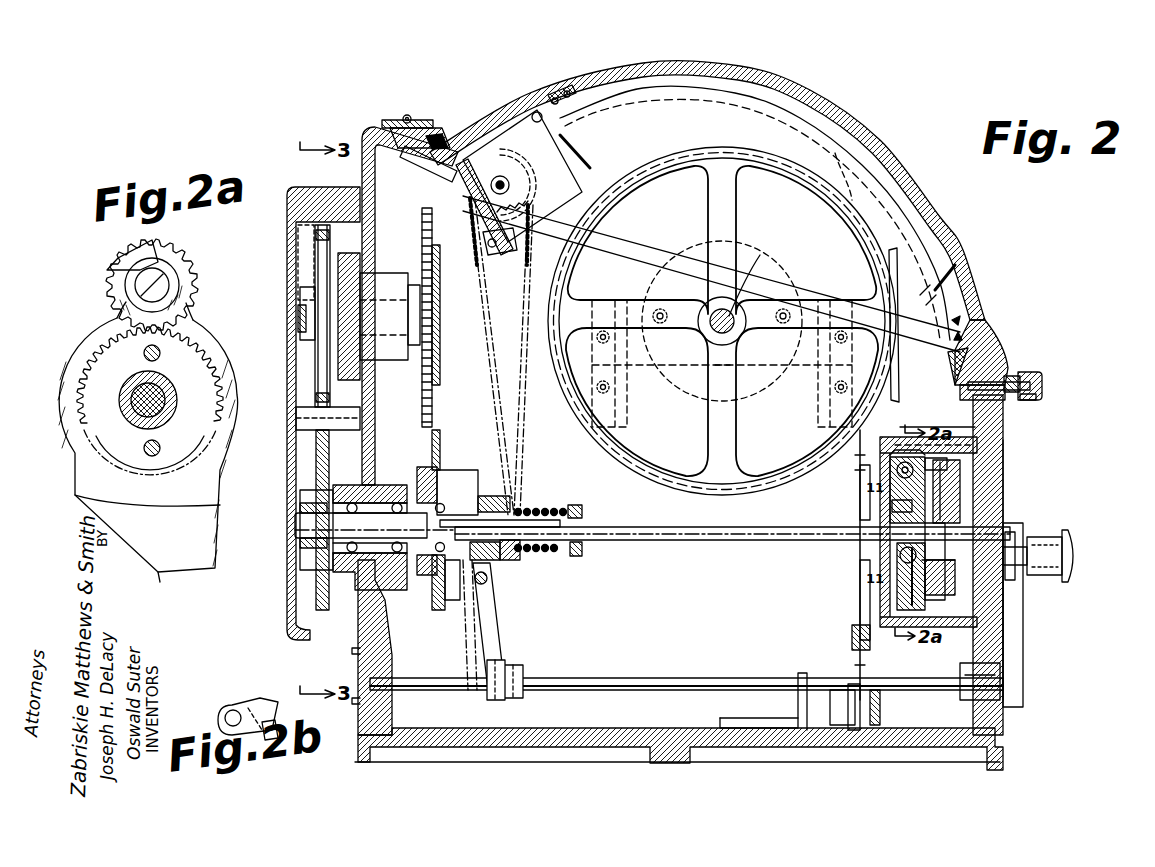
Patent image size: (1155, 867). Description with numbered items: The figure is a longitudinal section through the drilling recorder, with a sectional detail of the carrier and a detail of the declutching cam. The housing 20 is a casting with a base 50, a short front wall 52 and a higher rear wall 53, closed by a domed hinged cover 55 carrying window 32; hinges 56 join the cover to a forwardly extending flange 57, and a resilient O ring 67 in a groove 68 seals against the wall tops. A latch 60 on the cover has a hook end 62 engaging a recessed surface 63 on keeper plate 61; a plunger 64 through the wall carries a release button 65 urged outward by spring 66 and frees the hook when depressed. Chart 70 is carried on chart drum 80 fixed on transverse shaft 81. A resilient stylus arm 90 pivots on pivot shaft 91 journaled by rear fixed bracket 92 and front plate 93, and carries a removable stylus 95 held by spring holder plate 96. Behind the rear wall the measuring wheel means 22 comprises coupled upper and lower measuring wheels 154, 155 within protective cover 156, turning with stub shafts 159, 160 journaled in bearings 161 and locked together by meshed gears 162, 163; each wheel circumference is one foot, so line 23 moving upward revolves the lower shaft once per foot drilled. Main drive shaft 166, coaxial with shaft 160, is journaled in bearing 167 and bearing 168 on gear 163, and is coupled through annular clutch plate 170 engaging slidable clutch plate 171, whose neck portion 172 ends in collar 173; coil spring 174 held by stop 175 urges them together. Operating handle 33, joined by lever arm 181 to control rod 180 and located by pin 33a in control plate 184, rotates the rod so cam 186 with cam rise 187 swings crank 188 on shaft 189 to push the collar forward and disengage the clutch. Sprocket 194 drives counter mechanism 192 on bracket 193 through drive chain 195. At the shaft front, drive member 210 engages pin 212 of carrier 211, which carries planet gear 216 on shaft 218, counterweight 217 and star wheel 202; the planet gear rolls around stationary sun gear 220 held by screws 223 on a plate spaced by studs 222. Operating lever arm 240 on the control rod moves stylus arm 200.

In FIG. 2, the housing 20 is at (990, 300).
In FIG. 2, the window 32 is at (810, 94).
In FIG. 2, the chart 70 is at (862, 136).
In FIG. 2, the hinged upper cover 55 is at (538, 88).
In FIG. 2, the rear wall 53 is at (355, 190).
In FIG. 2, the hinges 56 is at (400, 116).
In FIG. 2, the resilient O ring 67 is at (428, 126).
In FIG. 2, the groove 68 is at (455, 140).
In FIG. 2, the forwardly extending flange 57 is at (410, 158).
In FIG. 2, the counter mechanism 192 is at (560, 130).
In FIG. 2, the bracket 193 is at (460, 182).
In FIG. 2, the drive chain 195 is at (508, 282).
In FIG. 2, the spring holder plate 96 is at (888, 280).
In FIG. 2, the stylus 95 is at (945, 262).
In FIG. 2, the chart drum 80 is at (728, 165).
In FIG. 2, the transverse shaft 81 is at (722, 330).
In FIG. 2, the latch 60 is at (995, 360).
In FIG. 2, the stylus arm 200 is at (965, 330).
In FIG. 2, the hook end 62 is at (948, 380).
In FIG. 2, the keeper plate 61 is at (1005, 398).
In FIG. 2, the recessed surface 63 is at (1010, 375).
In FIG. 2, the spring 66 is at (1040, 375).
In FIG. 2, the plunger 64 is at (1032, 385).
In FIG. 2, the release button 65 is at (1038, 397).
In FIG. 2, the front wall 52 is at (1003, 460).
In FIG. 2, the bearing 167 is at (1003, 492).
In FIG. 2, the lever arm 181 is at (1023, 635).
In FIG. 2, the control plate 184 is at (1010, 575).
In FIG. 2, the operating handle 33 is at (1078, 560).
In FIG. 2, the pin 33a is at (1010, 535).
In FIG. 2, the operating lever arm 240 is at (1000, 680).
In FIG. 2, the star wheel 202 is at (977, 445).
In FIG. 2A, the star wheel 202 is at (118, 268).
In FIG. 2, the planet gear 216 is at (895, 462).
In FIG. 2A, the planet gear 216 is at (110, 290).
In FIG. 2, the shaft 218 is at (925, 470).
In FIG. 2, the screws 223 is at (892, 505).
In FIG. 2, the pin 212 is at (960, 470).
In FIG. 2, the sun gear 220 is at (892, 515).
In FIG. 2A, the sun gear 220 is at (95, 360).
In FIG. 2, the carrier 211 is at (912, 555).
In FIG. 2A, the carrier 211 is at (75, 475).
In FIG. 2, the stylus arm 90 is at (862, 610).
In FIG. 2, the drive member 210 is at (852, 640).
In FIG. 2, the counterweight 217 is at (925, 600).
In FIG. 2A, the counterweight 217 is at (176, 584).
In FIG. 2, the studs 222 is at (895, 433).
In FIG. 2, the front plate 93 is at (880, 715).
In FIG. 2, the pivot shaft 91 is at (822, 715).
In FIG. 2, the rear fixed bracket 92 is at (778, 728).
In FIG. 2, the base 50 is at (578, 740).
In FIG. 2, the measuring wheel means 22 is at (286, 243).
In FIG. 2, the line 23 is at (322, 230).
In FIG. 2, the protective cover 156 is at (290, 270).
In FIG. 2, the upper measuring wheel 154 is at (300, 300).
In FIG. 2, the stub shaft 159 is at (298, 320).
In FIG. 2, the bearings 161 is at (385, 285).
In FIG. 2, the gear 162 is at (434, 392).
In FIG. 2, the gear 163 is at (440, 440).
In FIG. 2, the annular clutch plate 170 is at (452, 460).
In FIG. 2, the clutch plate 171 is at (485, 496).
In FIG. 2, the coil spring 174 is at (548, 510).
In FIG. 2, the stop 175 is at (582, 510).
In FIG. 2, the sprocket 194 is at (520, 552).
In FIG. 2, the collar 173 is at (495, 560).
In FIG. 2, the main drive shaft 166 is at (672, 546).
In FIG. 2A, the main drive shaft 166 is at (160, 402).
In FIG. 2, the stub shaft 160 is at (305, 530).
In FIG. 2, the bearing 168 is at (400, 570).
In FIG. 2, the lower measuring wheel 155 is at (305, 495).
In FIG. 2, the neck portion 172 is at (462, 600).
In FIG. 2, the shaft 189 is at (468, 640).
In FIG. 2, the crank 188 is at (498, 600).
In FIG. 2, the control rod 180 is at (570, 681).
In FIG. 2, the cam 186 is at (512, 660).
In FIG. 2B, the cam 186 is at (245, 700).
In FIG. 2B, the cam rise 187 is at (278, 732).